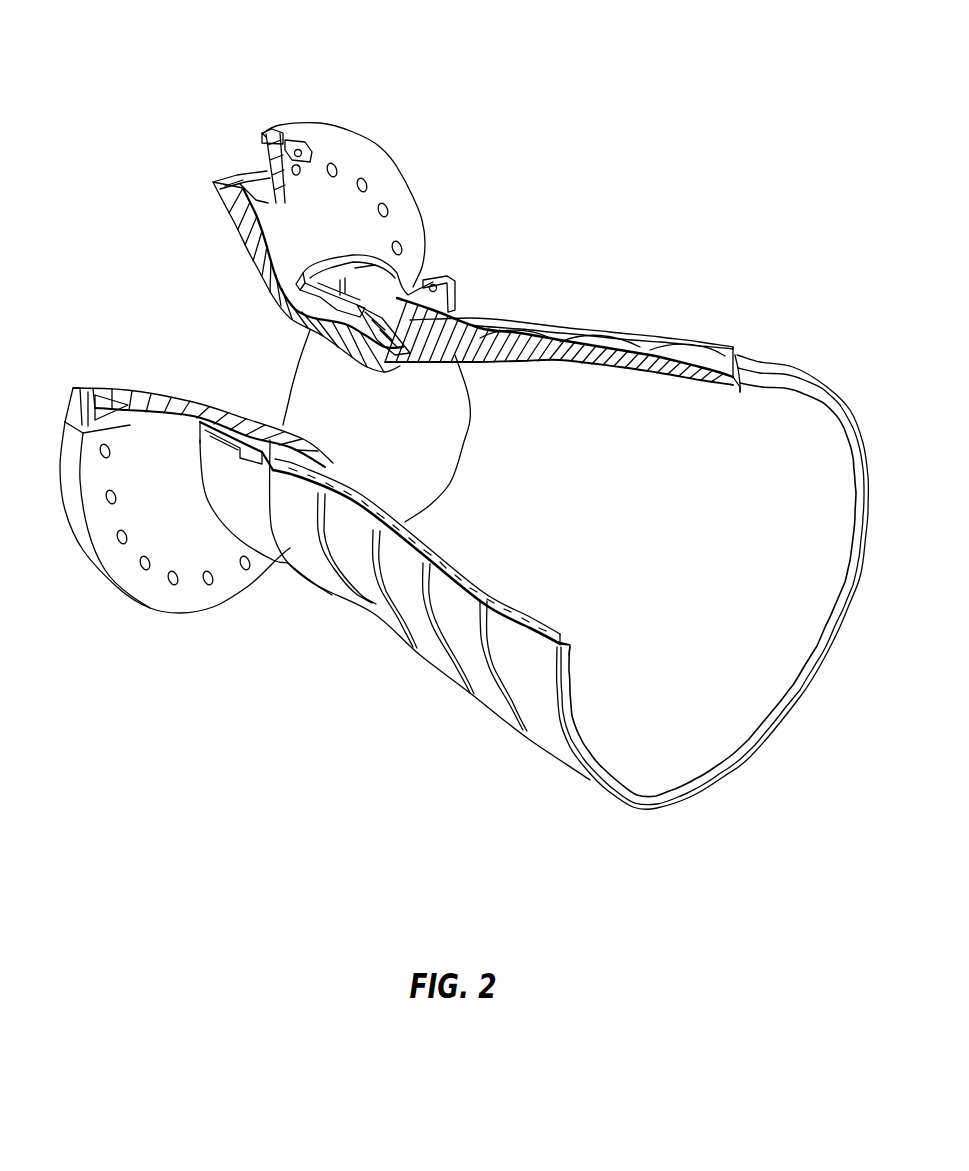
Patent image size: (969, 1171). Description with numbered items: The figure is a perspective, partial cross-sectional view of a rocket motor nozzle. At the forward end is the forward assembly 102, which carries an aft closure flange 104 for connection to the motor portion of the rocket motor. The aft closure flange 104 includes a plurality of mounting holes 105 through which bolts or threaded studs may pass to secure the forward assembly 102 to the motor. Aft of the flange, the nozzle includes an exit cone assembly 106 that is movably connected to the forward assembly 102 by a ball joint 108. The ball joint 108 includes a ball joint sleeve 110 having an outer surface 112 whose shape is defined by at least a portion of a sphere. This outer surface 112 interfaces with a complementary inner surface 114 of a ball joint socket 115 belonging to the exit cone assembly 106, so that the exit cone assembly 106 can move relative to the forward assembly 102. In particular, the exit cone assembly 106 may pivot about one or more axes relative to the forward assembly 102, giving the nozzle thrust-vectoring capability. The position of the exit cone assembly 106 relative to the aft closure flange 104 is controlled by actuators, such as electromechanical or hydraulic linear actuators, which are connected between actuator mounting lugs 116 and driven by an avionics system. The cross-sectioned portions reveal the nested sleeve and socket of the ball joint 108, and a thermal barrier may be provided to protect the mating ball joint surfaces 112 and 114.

The forward assembly 102 is at (247, 94).
The aft closure flange 104 is at (360, 165).
The mounting holes 105 is at (103, 458).
The exit cone assembly 106 is at (816, 325).
The ball joint 108 is at (483, 251).
The ball joint sleeve 110 is at (320, 317).
The outer surface 112 is at (350, 256).
The inner surface 114 is at (333, 292).
The ball joint socket 115 is at (420, 285).
The actuator mounting lugs 116 is at (300, 140).